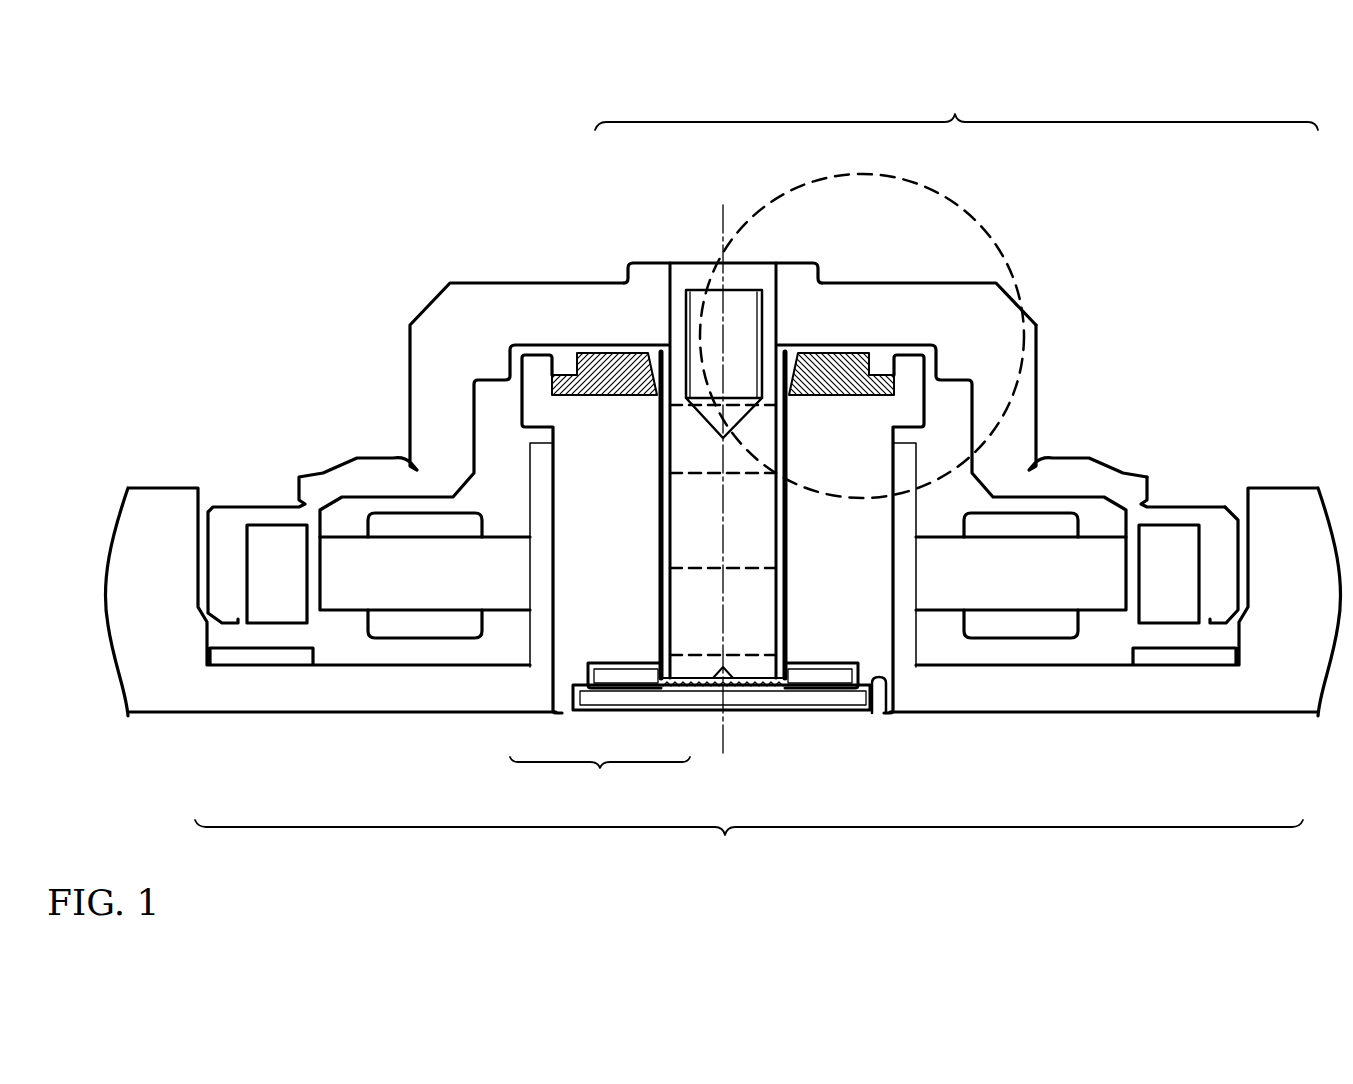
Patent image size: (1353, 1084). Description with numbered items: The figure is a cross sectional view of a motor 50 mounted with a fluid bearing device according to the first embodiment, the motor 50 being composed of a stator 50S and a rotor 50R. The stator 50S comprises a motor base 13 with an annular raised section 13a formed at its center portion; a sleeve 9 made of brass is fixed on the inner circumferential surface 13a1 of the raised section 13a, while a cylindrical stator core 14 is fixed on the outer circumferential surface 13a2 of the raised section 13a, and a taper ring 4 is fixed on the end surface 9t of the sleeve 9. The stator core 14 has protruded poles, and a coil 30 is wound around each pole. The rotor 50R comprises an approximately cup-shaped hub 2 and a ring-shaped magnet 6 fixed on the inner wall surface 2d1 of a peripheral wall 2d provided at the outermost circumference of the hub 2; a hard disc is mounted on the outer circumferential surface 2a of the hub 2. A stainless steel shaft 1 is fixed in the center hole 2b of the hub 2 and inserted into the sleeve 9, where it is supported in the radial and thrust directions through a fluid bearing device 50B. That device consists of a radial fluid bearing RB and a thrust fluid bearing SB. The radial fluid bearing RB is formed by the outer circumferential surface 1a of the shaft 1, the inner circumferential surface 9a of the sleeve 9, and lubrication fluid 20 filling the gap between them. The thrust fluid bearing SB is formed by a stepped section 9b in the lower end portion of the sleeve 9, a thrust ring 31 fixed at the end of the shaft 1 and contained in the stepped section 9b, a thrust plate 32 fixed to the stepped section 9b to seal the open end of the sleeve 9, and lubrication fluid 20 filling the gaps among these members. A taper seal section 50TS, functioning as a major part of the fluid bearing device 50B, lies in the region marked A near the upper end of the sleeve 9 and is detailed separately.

The motor 50 is at (318, 215).
The rotor 50R is at (982, 100).
The stator 50S is at (752, 868).
The fluid bearing device 50B is at (600, 777).
The taper seal section 50TS is at (792, 340).
The shaft 1 is at (773, 300).
The outer circumferential surface of the shaft 1a is at (677, 290).
The hub 2 is at (977, 318).
The outer circumferential surface of the hub 2a is at (1040, 373).
The center hole of the hub 2b is at (668, 330).
The peripheral wall 2d is at (1218, 552).
The inner wall surface of the peripheral wall 2d1 is at (1215, 598).
The thrust ring 31 is at (885, 330).
The taper ring 4 is at (587, 343).
The magnet 6 is at (1167, 552).
The sleeve 9 is at (848, 607).
The inner circumferential surface of the sleeve 9a is at (833, 400).
The stepped section 9b is at (878, 700).
The end surface of the sleeve 9t is at (600, 395).
The motor base 13 is at (1225, 690).
The raised section 13a is at (550, 558).
The inner circumferential surface of the raised section 13a1 is at (540, 507).
The outer circumferential surface of the raised section 13a2 is at (540, 633).
The stator core 14 is at (1095, 585).
The coil 30 is at (1030, 627).
The thrust plate 32 is at (813, 677).
The lubrication fluid 20 is at (652, 345).
The region A is at (793, 192).
The radial fluid bearing RB is at (637, 402).
The thrust fluid bearing SB is at (643, 708).